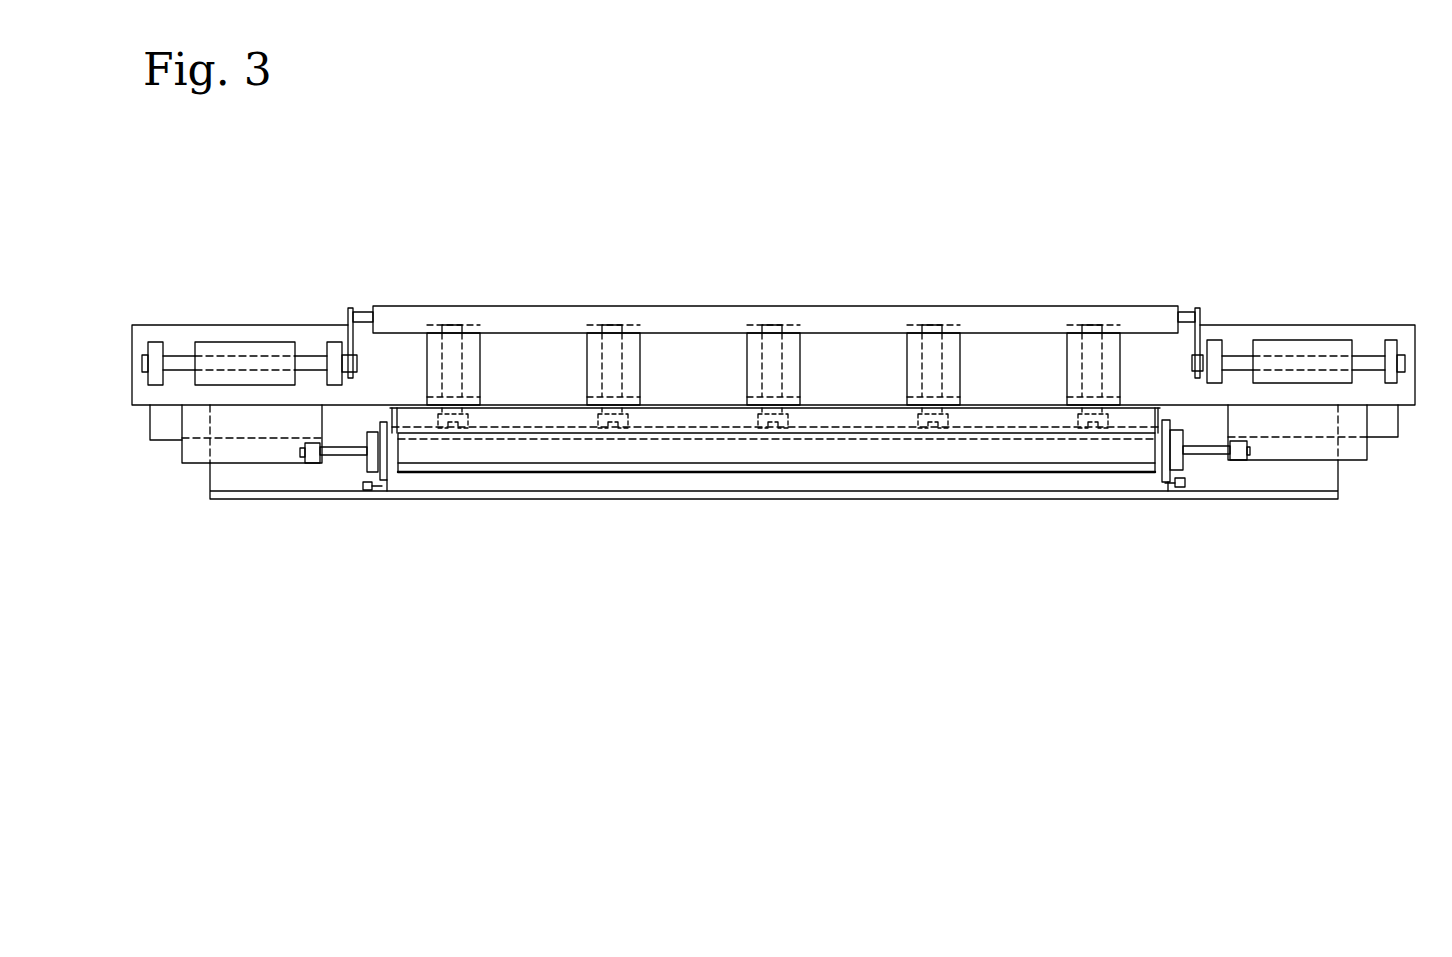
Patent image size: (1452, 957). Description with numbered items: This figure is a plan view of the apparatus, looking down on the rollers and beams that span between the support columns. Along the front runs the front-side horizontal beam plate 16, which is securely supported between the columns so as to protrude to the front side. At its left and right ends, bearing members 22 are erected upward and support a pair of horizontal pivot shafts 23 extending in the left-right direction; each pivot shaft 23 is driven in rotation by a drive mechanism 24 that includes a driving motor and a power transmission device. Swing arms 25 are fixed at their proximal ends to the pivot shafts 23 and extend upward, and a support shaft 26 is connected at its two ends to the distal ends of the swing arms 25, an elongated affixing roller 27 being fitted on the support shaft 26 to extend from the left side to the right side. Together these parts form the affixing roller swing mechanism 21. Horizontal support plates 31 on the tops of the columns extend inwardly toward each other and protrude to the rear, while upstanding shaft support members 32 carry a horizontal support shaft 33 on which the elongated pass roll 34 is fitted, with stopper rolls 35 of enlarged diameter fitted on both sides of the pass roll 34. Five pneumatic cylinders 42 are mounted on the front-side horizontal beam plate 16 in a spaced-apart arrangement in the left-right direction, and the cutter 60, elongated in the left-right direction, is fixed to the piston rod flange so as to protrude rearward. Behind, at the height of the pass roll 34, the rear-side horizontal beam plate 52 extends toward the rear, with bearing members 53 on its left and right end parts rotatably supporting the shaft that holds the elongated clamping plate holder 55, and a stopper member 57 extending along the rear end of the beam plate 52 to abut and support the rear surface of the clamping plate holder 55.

The front-side horizontal beam plate 16 is at (257, 325).
The affixing roller swing mechanism 21 is at (286, 214).
The bearing member 22 is at (155, 342).
The pivot shaft 23 is at (313, 348).
The drive mechanism 24 is at (225, 342).
The swing arm 25 is at (339, 318).
The support shaft 26 is at (366, 312).
The affixing roller 27 is at (677, 306).
The horizontal support plate 31 is at (165, 440).
The shaft support member 32 is at (318, 463).
The horizontal support shaft 33 is at (345, 457).
The pass roll 34 is at (825, 453).
The stopper roll 35 is at (383, 423).
The pneumatic cylinder 42 is at (480, 357).
The rear-side horizontal beam plate 52 is at (209, 478).
The bearing member 53 is at (367, 493).
The clamping plate holder 55 is at (790, 483).
The stopper member 57 is at (870, 499).
The cutter 60 is at (680, 440).